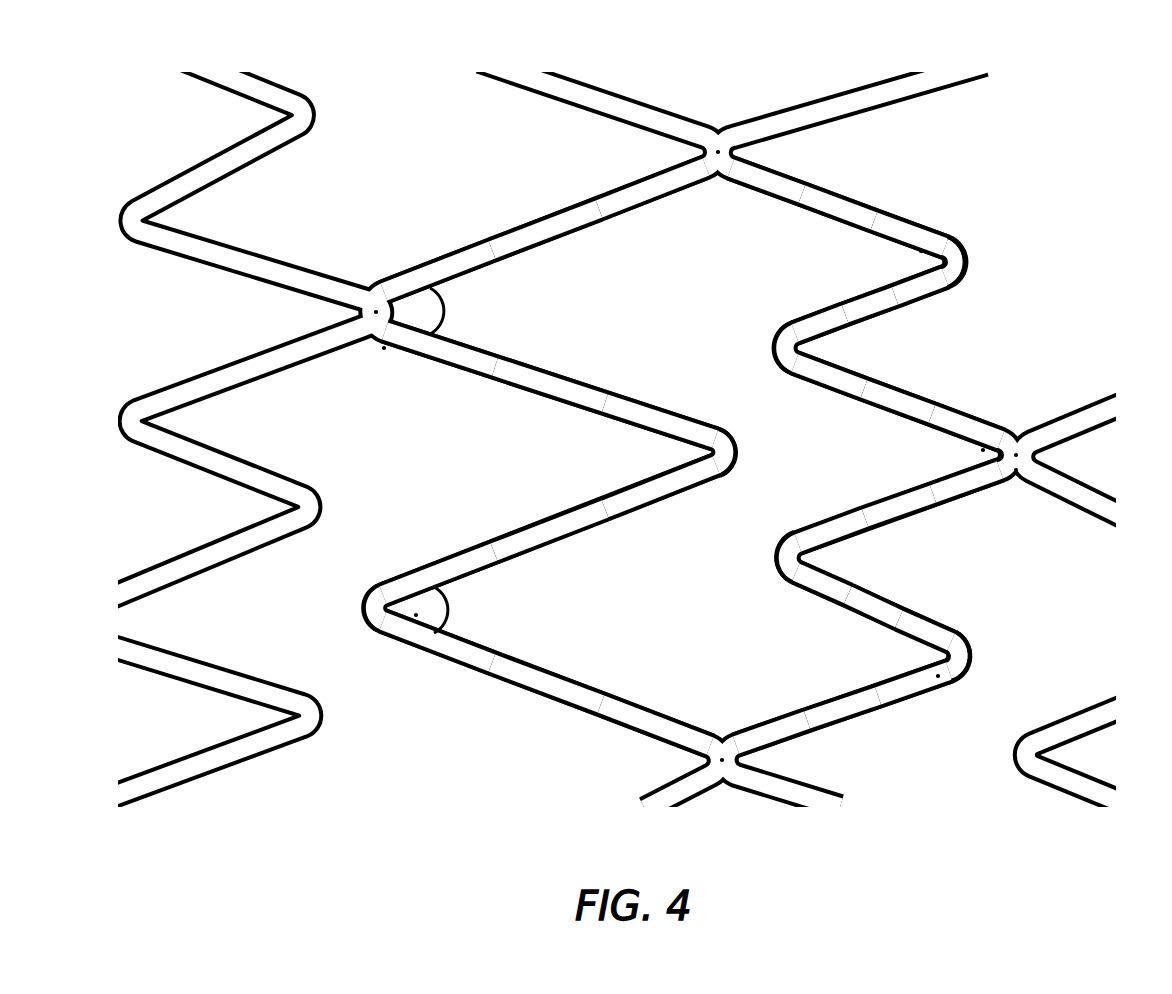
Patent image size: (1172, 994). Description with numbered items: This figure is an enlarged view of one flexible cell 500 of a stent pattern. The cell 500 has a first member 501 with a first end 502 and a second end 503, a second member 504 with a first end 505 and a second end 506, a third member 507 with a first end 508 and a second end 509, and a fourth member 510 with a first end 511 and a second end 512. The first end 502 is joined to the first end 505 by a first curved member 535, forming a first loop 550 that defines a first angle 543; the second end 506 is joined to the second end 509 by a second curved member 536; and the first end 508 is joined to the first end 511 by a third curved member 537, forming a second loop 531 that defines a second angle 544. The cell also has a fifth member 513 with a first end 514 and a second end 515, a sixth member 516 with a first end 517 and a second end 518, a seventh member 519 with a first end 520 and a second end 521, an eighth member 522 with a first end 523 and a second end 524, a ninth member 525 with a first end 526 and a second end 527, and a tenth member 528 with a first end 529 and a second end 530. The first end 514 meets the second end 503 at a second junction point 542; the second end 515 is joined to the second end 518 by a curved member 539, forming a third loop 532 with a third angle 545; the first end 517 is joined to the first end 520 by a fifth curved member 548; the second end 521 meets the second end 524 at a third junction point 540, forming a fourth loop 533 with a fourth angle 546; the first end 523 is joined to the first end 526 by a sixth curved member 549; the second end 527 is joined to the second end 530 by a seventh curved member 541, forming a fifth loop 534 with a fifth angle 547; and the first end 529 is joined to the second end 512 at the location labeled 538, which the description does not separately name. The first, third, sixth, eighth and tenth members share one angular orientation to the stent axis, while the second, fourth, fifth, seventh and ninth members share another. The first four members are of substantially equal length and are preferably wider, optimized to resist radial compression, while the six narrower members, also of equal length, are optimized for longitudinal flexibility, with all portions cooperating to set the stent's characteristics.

The flexible cell 500 is at (708, 266).
The first member 501 is at (540, 224).
The first end of first member 502 is at (407, 272).
The second end of first member 503 is at (682, 186).
The second member 504 is at (574, 381).
The first end of second member 505 is at (428, 347).
The second end of second member 506 is at (689, 416).
The third member 507 is at (539, 533).
The first end of third member 508 is at (425, 564).
The second end of third member 509 is at (673, 488).
The fourth member 510 is at (583, 685).
The first end of fourth member 511 is at (452, 648).
The second end of fourth member 512 is at (690, 718).
The fifth member 513 is at (847, 204).
The first end of fifth member 514 is at (762, 178).
The second end of fifth member 515 is at (911, 224).
The sixth member 516 is at (864, 298).
The first end of sixth member 517 is at (786, 328).
The second end of sixth member 518 is at (914, 260).
The seventh member 519 is at (930, 410).
The first end of seventh member 520 is at (806, 368).
The second end of seventh member 521 is at (997, 435).
The eighth member 522 is at (904, 498).
The first end of eighth member 523 is at (823, 525).
The second end of eighth member 524 is at (985, 458).
The ninth member 525 is at (888, 602).
The first end of ninth member 526 is at (806, 568).
The second end of ninth member 527 is at (940, 635).
The tenth member 528 is at (826, 700).
The first end of tenth member 529 is at (746, 730).
The second end of tenth member 530 is at (925, 670).
The second loop 531 is at (416, 615).
The third loop 532 is at (966, 265).
The fourth loop 533 is at (1013, 470).
The fifth loop 534 is at (969, 672).
The first curved member 535 is at (368, 313).
The second curved member 536 is at (738, 455).
The third curved member 537 is at (364, 607).
The junction 538 is at (722, 755).
The curved member 539 is at (963, 252).
The third junction point 540 is at (1016, 432).
The seventh curved member 541 is at (968, 650).
The second junction point 542 is at (715, 148).
The first angle 543 is at (442, 294).
The second angle 544 is at (447, 603).
The third angle 545 is at (921, 251).
The fourth angle 546 is at (983, 450).
The fifth angle 547 is at (938, 676).
The fifth curved member 548 is at (776, 352).
The sixth curved member 549 is at (778, 557).
The first loop 550 is at (384, 348).